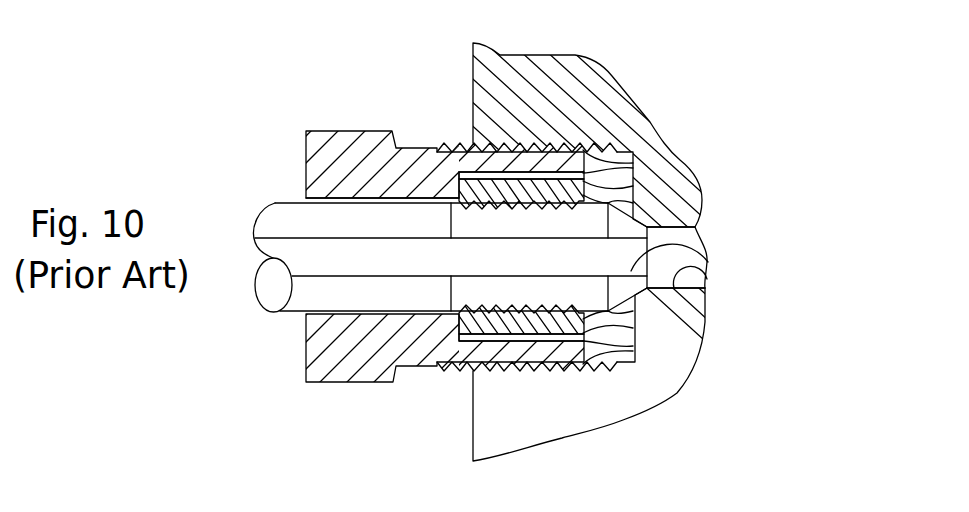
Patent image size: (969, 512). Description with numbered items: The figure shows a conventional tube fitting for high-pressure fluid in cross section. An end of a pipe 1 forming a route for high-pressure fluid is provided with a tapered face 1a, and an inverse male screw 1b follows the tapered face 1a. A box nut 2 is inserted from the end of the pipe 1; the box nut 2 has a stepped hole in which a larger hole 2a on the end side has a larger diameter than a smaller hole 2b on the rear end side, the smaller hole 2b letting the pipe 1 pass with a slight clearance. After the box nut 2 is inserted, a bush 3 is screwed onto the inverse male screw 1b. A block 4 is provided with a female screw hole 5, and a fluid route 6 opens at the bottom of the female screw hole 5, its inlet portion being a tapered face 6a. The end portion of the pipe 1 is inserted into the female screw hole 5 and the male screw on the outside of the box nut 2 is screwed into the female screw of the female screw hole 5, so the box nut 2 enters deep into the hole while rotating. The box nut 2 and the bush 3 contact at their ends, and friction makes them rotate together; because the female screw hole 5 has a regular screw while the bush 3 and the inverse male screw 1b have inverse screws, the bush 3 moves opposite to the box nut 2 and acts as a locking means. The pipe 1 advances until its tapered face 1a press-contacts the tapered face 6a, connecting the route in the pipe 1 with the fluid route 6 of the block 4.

The pipe 1 is at (274, 216).
The tapered face 1a is at (637, 330).
The inverse male screw 1b is at (645, 198).
The box nut 2 is at (345, 366).
The larger hole 2a is at (590, 172).
The smaller hole 2b is at (372, 205).
The bush 3 is at (494, 325).
The block 4 is at (531, 76).
The female screw hole 5 is at (645, 156).
The fluid route 6 is at (705, 275).
The tapered face 6a is at (701, 246).